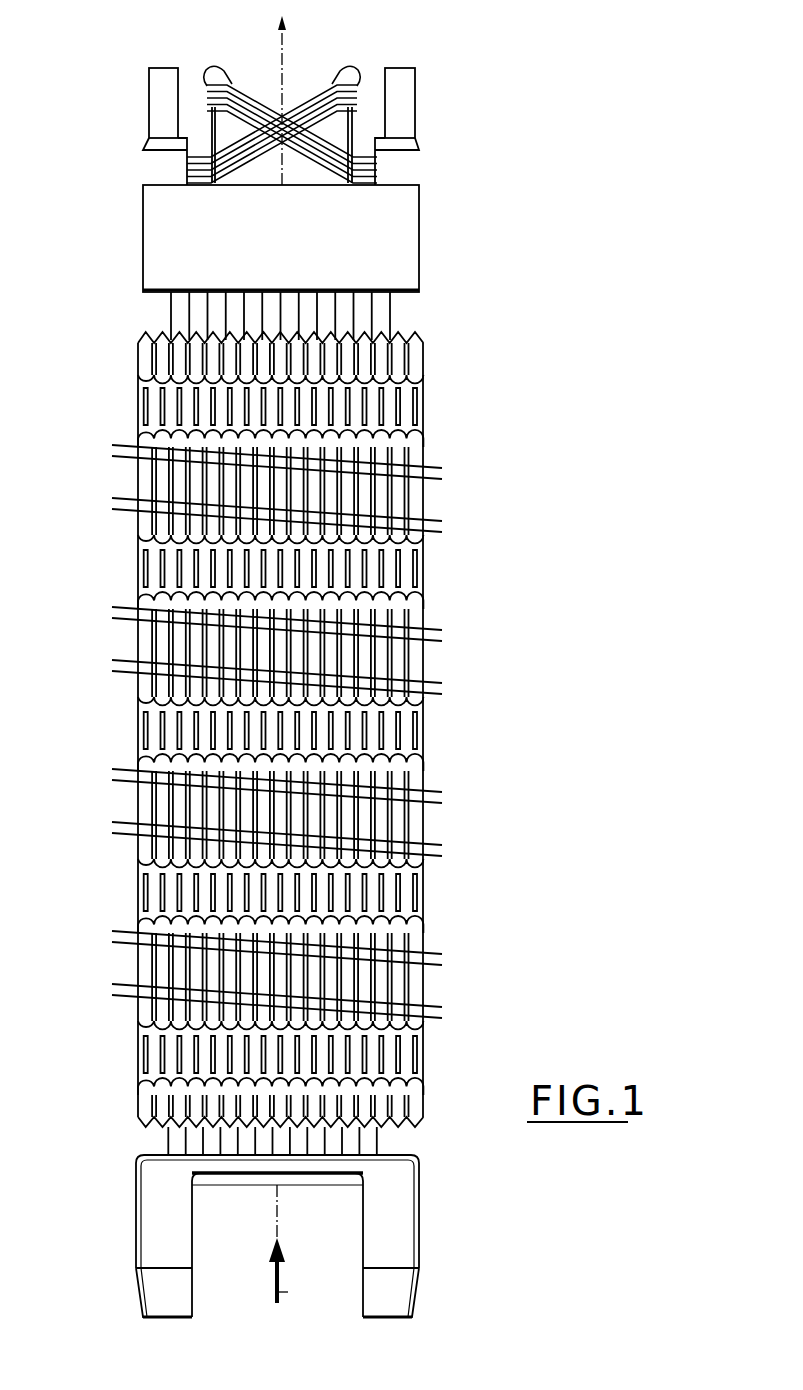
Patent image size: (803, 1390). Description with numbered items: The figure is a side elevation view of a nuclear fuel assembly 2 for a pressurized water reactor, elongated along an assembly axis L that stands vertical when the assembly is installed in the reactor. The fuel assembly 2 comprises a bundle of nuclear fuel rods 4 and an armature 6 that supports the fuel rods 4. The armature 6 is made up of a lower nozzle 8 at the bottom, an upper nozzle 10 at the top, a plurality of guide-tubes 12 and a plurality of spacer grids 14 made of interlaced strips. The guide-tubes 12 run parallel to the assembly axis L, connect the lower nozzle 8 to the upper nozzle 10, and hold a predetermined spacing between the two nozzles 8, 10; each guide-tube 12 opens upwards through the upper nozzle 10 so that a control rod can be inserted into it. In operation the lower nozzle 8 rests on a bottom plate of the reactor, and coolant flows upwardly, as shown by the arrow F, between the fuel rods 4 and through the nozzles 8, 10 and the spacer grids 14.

The nuclear fuel assembly 2 is at (515, 75).
The nuclear fuel rods 4 is at (399, 362).
The armature 6 is at (474, 245).
The lower nozzle 8 is at (136, 1188).
The upper nozzle 10 is at (152, 246).
The guide-tubes 12 is at (215, 327).
The spacer grids 14 is at (423, 408).